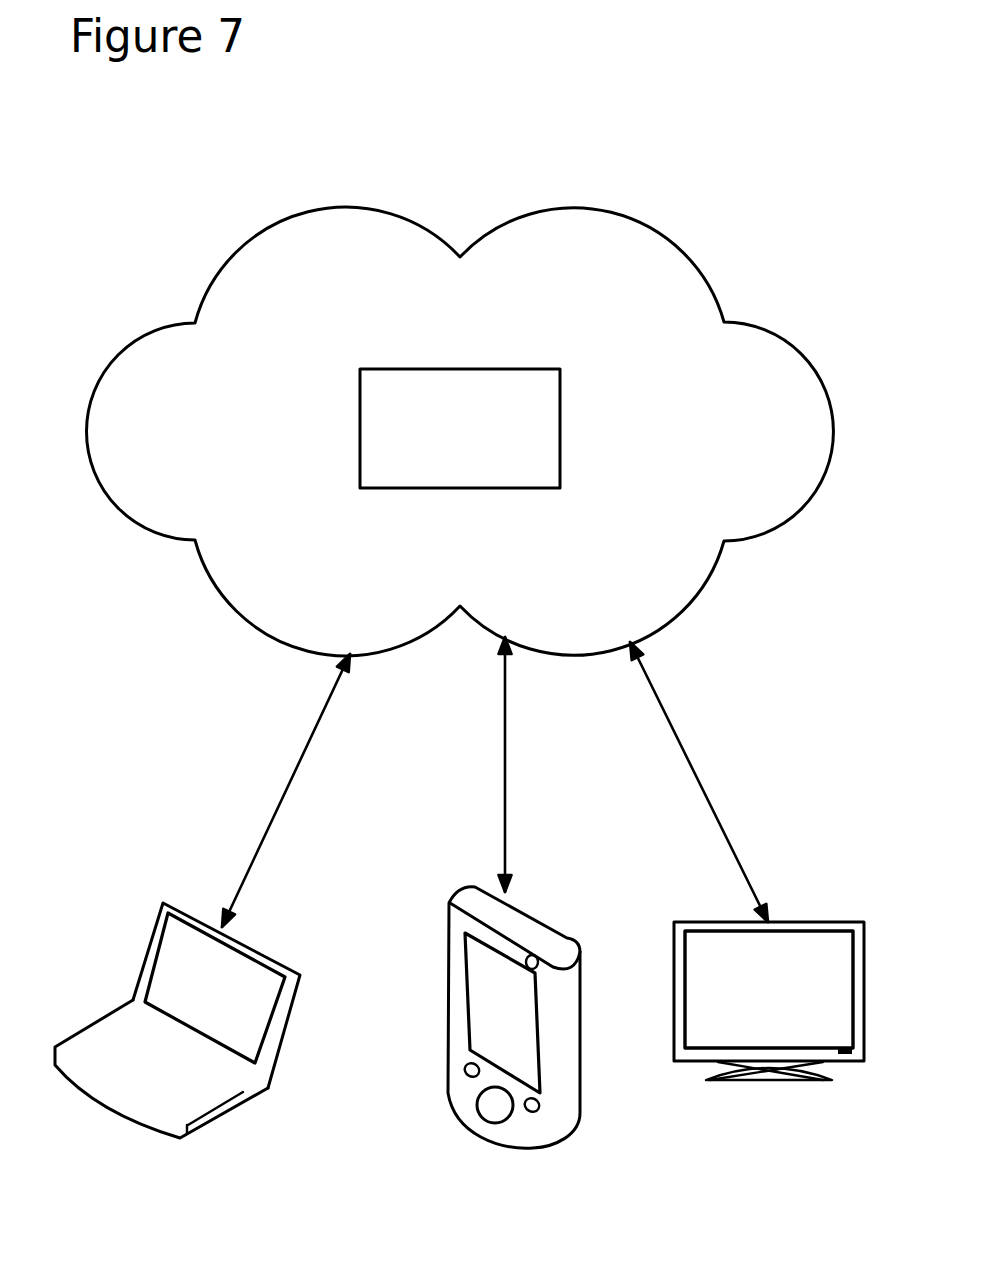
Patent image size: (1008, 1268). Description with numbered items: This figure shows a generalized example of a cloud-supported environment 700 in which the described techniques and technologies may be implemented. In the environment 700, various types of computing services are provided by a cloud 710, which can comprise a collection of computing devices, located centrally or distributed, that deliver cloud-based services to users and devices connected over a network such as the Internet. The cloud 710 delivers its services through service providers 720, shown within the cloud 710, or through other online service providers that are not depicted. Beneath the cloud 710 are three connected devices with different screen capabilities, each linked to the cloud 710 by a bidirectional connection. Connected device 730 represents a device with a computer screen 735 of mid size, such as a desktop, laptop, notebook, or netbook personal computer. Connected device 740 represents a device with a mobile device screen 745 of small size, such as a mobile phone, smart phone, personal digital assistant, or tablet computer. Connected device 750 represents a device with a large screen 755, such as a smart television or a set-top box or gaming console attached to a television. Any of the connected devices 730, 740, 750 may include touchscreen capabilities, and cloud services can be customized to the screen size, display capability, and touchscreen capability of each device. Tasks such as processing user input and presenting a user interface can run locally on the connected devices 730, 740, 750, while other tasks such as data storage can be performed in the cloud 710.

The cloud-supported environment 700 is at (798, 205).
The cloud 710 is at (439, 333).
The service providers 720 is at (439, 469).
The connected device 730 is at (72, 1037).
The computer screen 735 is at (189, 1002).
The connected device 740 is at (463, 887).
The mobile device screen 745 is at (527, 1028).
The connected device 750 is at (840, 922).
The large screen 755 is at (790, 1000).